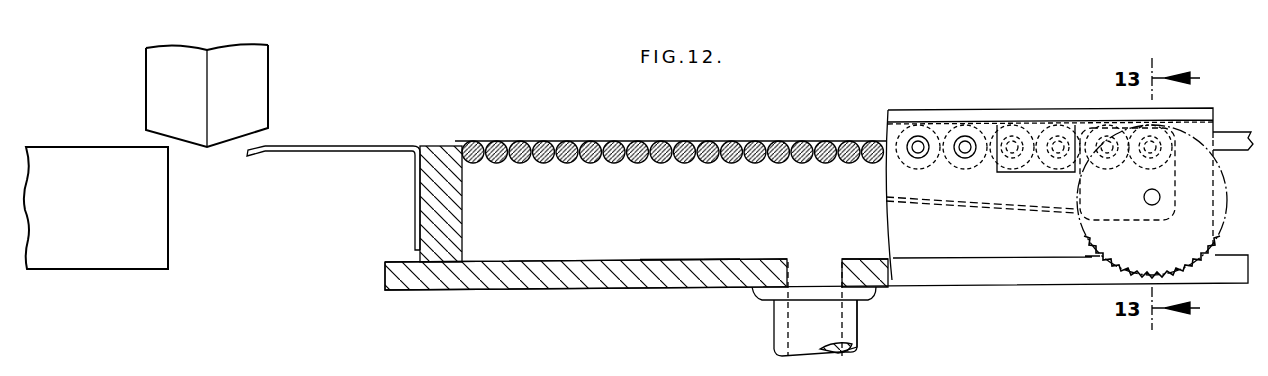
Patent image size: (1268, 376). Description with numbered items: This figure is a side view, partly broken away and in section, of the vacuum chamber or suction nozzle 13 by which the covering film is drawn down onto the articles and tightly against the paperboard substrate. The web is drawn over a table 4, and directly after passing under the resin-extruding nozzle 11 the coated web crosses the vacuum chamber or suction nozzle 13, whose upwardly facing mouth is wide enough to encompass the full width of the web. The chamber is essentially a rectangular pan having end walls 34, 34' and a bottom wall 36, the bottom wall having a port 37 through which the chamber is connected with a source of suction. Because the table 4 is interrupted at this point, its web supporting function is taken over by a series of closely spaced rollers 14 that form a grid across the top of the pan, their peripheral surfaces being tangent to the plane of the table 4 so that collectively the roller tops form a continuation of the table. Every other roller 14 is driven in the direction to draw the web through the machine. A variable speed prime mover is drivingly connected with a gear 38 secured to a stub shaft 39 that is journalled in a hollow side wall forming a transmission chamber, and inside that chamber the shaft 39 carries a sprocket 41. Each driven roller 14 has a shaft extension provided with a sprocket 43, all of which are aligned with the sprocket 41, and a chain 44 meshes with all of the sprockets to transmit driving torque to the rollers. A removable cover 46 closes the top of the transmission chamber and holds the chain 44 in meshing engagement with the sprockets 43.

The table 4 is at (99, 147).
The nozzle 11 is at (254, 87).
The vacuum chamber or suction nozzle 13 is at (512, 290).
The rollers 14 is at (634, 141).
The end wall 34 is at (409, 204).
The end wall 34' is at (1237, 157).
The bottom wall 36 is at (691, 259).
The port 37 is at (794, 262).
The gear 38 is at (1162, 254).
The stub shaft 39 is at (1145, 196).
The sprocket 41 is at (1115, 219).
The sprocket 43 is at (940, 125).
The chain 44 is at (970, 212).
The removable cover 46 is at (1026, 110).